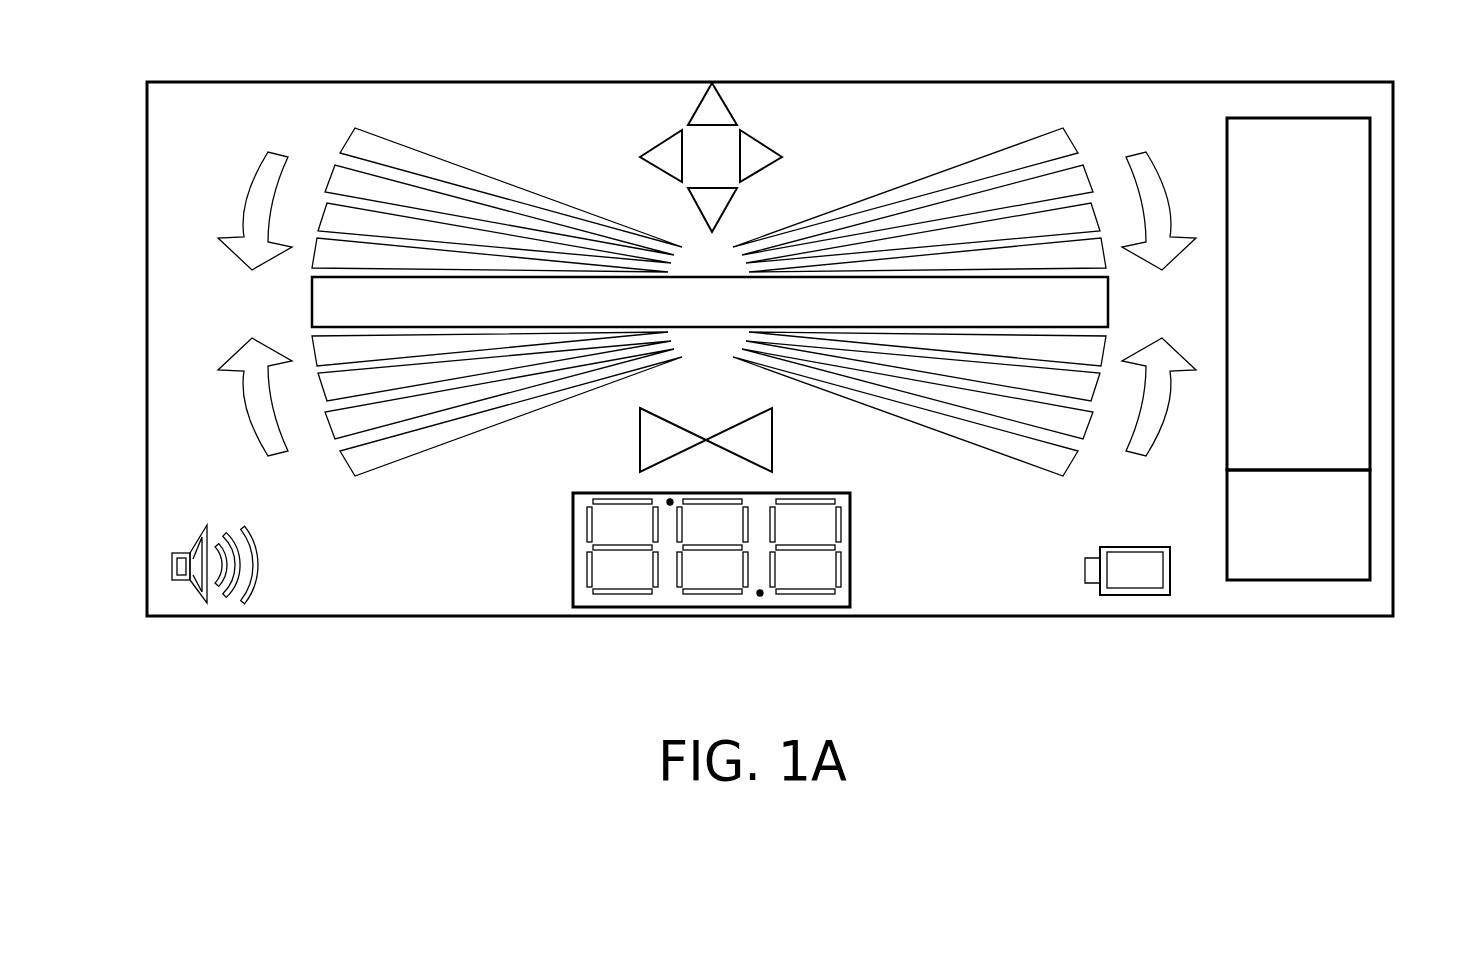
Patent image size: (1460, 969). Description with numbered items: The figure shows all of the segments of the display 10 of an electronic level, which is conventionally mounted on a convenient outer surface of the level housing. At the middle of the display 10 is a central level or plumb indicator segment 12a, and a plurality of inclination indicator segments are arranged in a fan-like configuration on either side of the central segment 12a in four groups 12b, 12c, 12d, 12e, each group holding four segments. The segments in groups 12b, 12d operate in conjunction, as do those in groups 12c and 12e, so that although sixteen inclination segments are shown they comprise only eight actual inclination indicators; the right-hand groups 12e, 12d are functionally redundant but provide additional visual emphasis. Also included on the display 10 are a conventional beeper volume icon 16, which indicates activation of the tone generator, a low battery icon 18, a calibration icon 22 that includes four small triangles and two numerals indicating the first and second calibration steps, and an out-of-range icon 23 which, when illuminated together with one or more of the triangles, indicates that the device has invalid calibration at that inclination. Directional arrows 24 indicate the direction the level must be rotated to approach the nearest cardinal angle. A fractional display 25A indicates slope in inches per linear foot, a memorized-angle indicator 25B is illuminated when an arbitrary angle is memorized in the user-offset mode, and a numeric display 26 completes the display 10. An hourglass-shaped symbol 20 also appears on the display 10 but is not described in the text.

The display 10 is at (945, 82).
The central level indicator segment 12a is at (710, 302).
The inclination indicator segment group 12b is at (315, 250).
The inclination indicator segment group 12c is at (315, 354).
The inclination indicator segment group 12d is at (1103, 354).
The inclination indicator segment group 12e is at (1103, 250).
The beeper volume icon 16 is at (196, 588).
The low battery icon 18 is at (1118, 597).
The hourglass wait indicator 20 is at (772, 420).
The calibration icon 22 is at (713, 113).
The out-of-range icon 23 is at (555, 98).
The directional arrows 24 is at (245, 208).
The fractional display 25A is at (1308, 118).
The memorized-angle indicator 25B is at (1370, 493).
The numeric display 26 is at (850, 515).